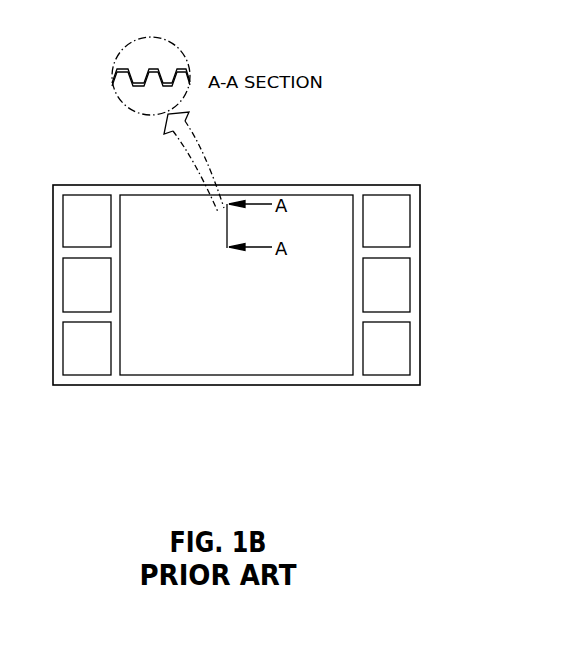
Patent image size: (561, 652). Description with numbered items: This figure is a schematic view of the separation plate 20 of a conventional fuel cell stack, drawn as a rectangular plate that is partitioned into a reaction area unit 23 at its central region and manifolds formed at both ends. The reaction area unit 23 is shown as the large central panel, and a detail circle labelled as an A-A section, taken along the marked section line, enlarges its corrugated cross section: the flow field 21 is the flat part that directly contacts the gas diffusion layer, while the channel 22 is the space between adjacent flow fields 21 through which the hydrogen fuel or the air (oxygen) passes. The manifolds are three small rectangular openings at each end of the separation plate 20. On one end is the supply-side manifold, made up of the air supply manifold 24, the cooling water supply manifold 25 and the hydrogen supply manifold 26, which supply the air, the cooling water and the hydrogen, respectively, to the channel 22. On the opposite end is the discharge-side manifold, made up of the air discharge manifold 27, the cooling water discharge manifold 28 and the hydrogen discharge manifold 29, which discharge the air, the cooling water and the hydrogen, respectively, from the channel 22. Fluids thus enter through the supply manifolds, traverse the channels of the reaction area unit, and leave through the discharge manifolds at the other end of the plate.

The separation plate 20 is at (118, 390).
The flow field 21 is at (136, 86).
The channel 22 is at (134, 72).
The reaction area unit 23 is at (228, 362).
The air supply manifold 24 is at (77, 222).
The cooling water supply manifold 25 is at (77, 287).
The hydrogen supply manifold 26 is at (77, 347).
The air discharge manifold 27 is at (390, 350).
The cooling water discharge manifold 28 is at (390, 287).
The hydrogen discharge manifold 29 is at (390, 223).